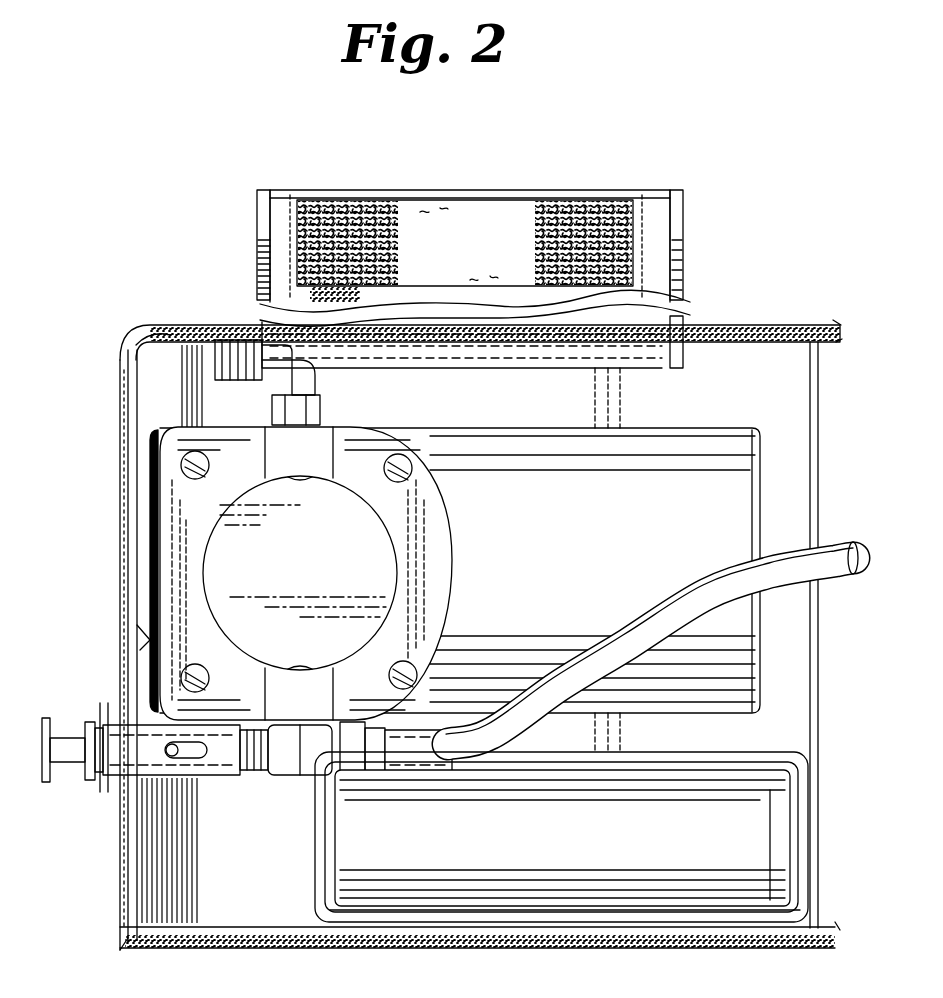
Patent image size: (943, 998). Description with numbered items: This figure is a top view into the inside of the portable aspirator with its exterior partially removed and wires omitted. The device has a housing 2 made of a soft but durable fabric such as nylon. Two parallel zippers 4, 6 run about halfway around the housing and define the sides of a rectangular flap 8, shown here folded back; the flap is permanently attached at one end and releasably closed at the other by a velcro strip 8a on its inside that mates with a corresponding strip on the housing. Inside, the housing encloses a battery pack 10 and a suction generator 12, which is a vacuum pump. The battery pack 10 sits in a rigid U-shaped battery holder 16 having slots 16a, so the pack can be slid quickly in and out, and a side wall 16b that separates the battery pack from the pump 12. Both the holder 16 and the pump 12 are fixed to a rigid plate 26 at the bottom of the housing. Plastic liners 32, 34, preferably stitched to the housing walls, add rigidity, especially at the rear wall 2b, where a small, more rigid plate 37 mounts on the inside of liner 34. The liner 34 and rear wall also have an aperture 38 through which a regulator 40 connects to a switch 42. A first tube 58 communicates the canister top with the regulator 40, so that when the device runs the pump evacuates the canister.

The housing 2 is at (742, 330).
The rear wall 2b is at (122, 560).
The zipper 4 is at (258, 258).
The zipper 6 is at (685, 232).
The rectangular flap 8 is at (469, 451).
The velcro strip 8a is at (470, 230).
The battery pack 10 is at (772, 835).
The suction generator 12 is at (157, 440).
The battery holder 16 is at (555, 858).
The slots 16a is at (380, 938).
The side wall 16b is at (790, 760).
The rigid plate 26 is at (790, 706).
The plastic liner 32 is at (130, 900).
The plastic liner 34 is at (132, 338).
The rigid plate 37 is at (140, 640).
The aperture 38 is at (108, 728).
The regulator 40 is at (300, 762).
The switch 42 is at (46, 765).
The first tube 58 is at (840, 548).